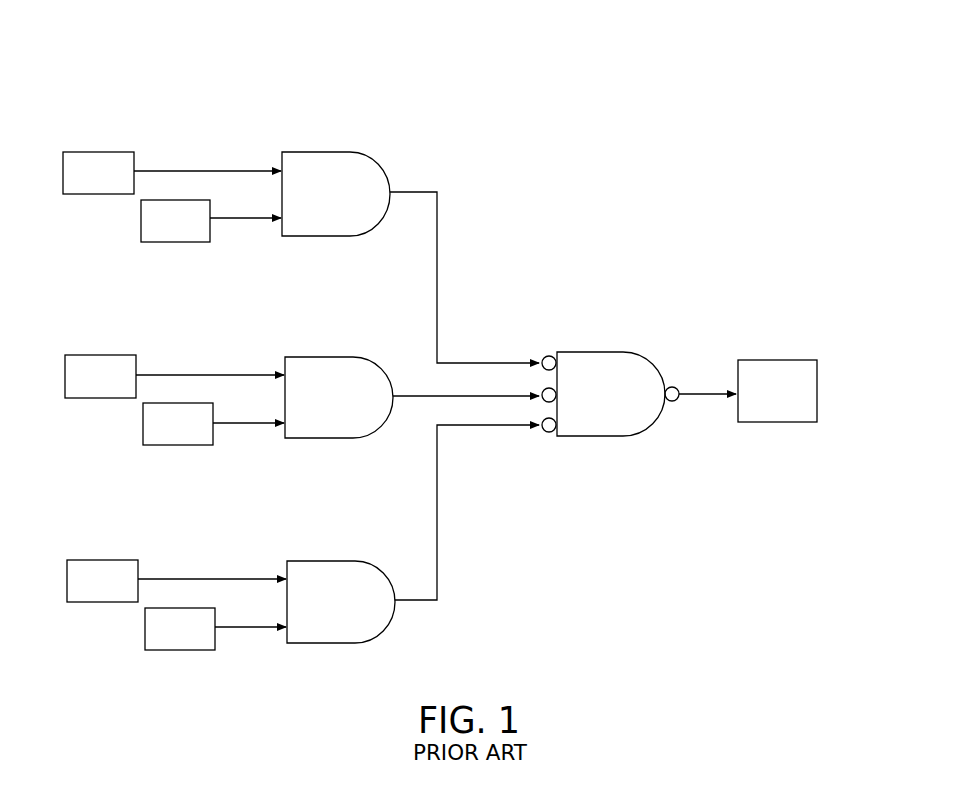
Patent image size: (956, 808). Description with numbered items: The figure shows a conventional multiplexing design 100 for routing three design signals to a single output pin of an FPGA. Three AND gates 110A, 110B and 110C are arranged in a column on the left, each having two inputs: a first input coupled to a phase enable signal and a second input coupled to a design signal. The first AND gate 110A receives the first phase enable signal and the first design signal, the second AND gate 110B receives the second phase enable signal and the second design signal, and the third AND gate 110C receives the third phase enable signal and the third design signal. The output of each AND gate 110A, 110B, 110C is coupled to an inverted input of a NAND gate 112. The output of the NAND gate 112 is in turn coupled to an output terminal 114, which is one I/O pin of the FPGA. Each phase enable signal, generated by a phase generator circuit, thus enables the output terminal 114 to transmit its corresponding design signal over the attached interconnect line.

The conventional multiplexing design 100 is at (660, 67).
The AND gate 110A is at (346, 152).
The AND gate 110B is at (347, 357).
The AND gate 110C is at (350, 561).
The NAND gate 112 is at (624, 352).
The output terminal 114 is at (778, 360).